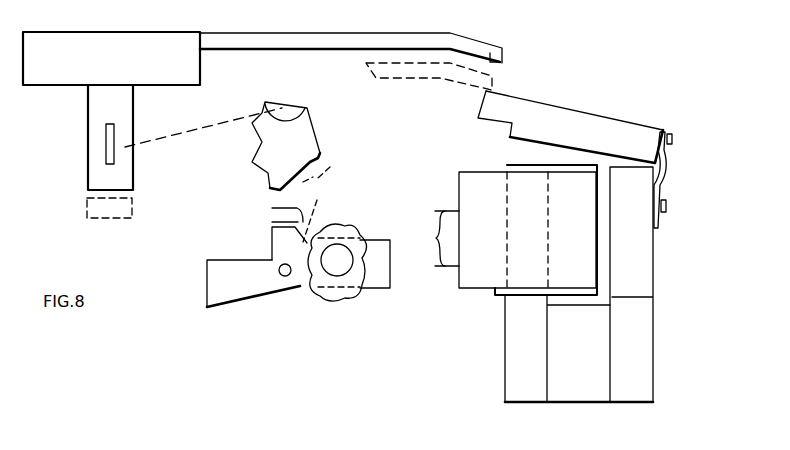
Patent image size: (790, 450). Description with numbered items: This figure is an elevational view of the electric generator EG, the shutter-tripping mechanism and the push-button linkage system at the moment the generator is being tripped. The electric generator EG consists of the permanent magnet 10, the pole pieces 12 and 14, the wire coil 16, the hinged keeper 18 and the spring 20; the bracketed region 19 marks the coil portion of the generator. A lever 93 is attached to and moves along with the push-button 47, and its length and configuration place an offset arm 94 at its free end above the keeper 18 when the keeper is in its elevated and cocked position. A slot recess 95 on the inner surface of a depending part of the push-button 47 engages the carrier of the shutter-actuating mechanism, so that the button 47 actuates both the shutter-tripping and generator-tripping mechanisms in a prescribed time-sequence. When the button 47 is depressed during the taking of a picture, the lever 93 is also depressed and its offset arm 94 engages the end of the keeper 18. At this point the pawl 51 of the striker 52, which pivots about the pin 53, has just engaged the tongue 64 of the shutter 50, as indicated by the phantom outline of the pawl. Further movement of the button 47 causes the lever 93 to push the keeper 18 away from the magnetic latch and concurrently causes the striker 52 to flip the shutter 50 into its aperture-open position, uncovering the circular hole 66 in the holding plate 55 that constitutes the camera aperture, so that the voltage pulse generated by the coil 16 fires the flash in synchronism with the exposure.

The push-button 47 is at (63, 40).
The slot recess 95 is at (120, 146).
The lever 93 is at (458, 72).
The offset arm 94 is at (503, 72).
The pin 53 is at (300, 113).
The striker member 52 is at (323, 162).
The pawl 51 is at (272, 208).
The tongue 64 is at (282, 241).
The shutter 50 is at (240, 293).
The plate 55 is at (322, 295).
The circular hole 66 is at (343, 267).
The hinged keeper 18 is at (588, 117).
The spring 20 is at (668, 173).
The wire coil 16 is at (477, 180).
The coil region 19 is at (436, 238).
The pole piece 12 is at (505, 376).
The pole piece 14 is at (653, 380).
The permanent magnet 10 is at (593, 397).
The electric generator EG is at (665, 338).